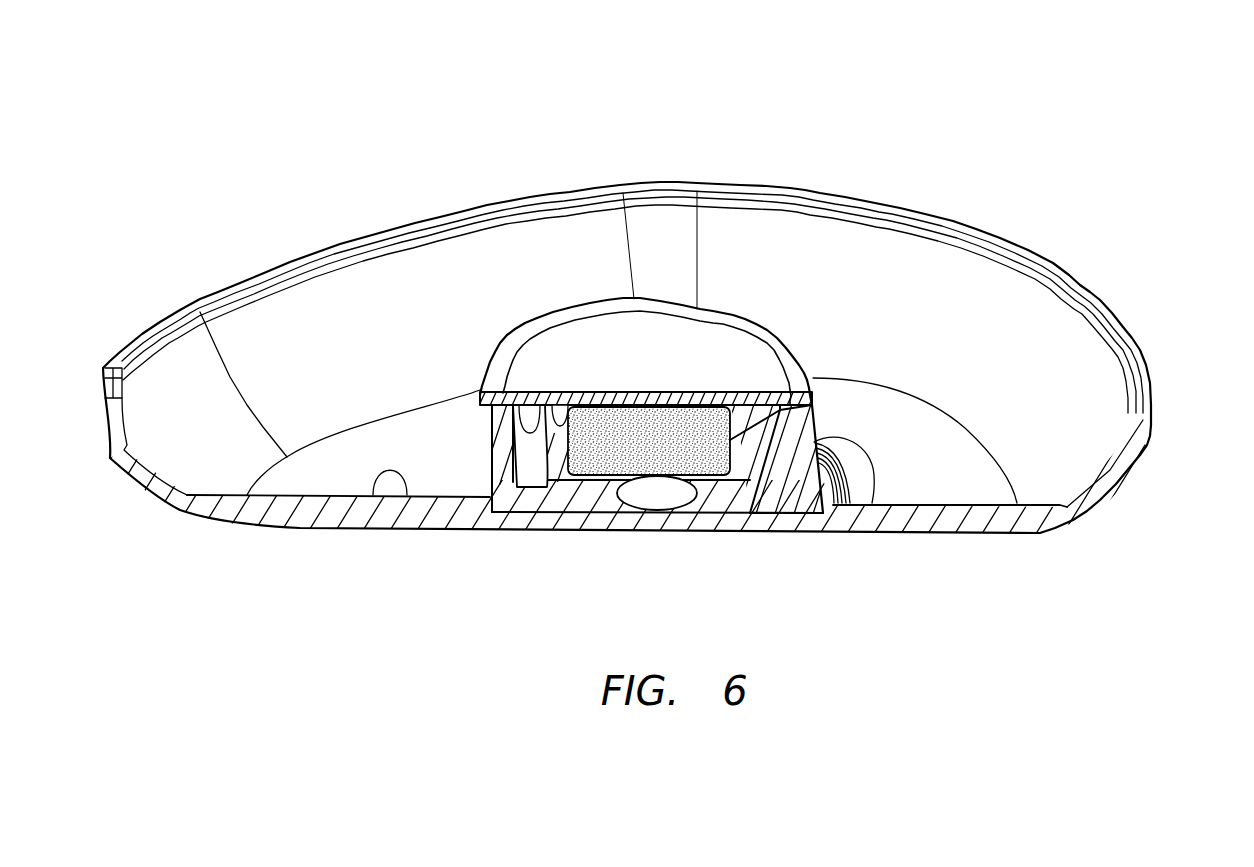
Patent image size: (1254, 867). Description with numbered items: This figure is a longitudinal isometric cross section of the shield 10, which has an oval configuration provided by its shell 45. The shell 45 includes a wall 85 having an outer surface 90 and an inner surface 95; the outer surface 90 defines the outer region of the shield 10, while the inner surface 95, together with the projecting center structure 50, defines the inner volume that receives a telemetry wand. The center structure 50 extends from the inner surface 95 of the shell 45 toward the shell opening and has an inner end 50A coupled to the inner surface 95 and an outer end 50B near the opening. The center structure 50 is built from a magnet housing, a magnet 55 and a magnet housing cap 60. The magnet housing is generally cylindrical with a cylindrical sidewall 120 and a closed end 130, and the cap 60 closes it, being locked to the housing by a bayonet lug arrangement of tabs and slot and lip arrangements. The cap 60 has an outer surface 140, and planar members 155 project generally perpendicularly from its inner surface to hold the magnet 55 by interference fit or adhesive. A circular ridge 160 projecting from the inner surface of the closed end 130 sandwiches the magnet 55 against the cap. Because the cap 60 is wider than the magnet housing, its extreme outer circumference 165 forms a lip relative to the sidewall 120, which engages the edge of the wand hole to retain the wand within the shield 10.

The shield 10 is at (975, 140).
The shell 45 is at (1046, 556).
The center structure 50 is at (470, 360).
The inner end 50A is at (488, 517).
The outer end 50B is at (630, 340).
The magnet 55 is at (617, 457).
The magnet housing cap 60 is at (808, 360).
The wall 85 is at (1123, 470).
The outer surface 90 is at (1150, 445).
The inner surface 95 is at (1077, 340).
The cylindrical sidewall 120 is at (853, 462).
The closed end 130 is at (760, 490).
The outer surface 140 is at (720, 343).
The planar members 155 is at (550, 462).
The circular ridge 160 is at (707, 478).
The extreme outer circumference 165 is at (813, 378).